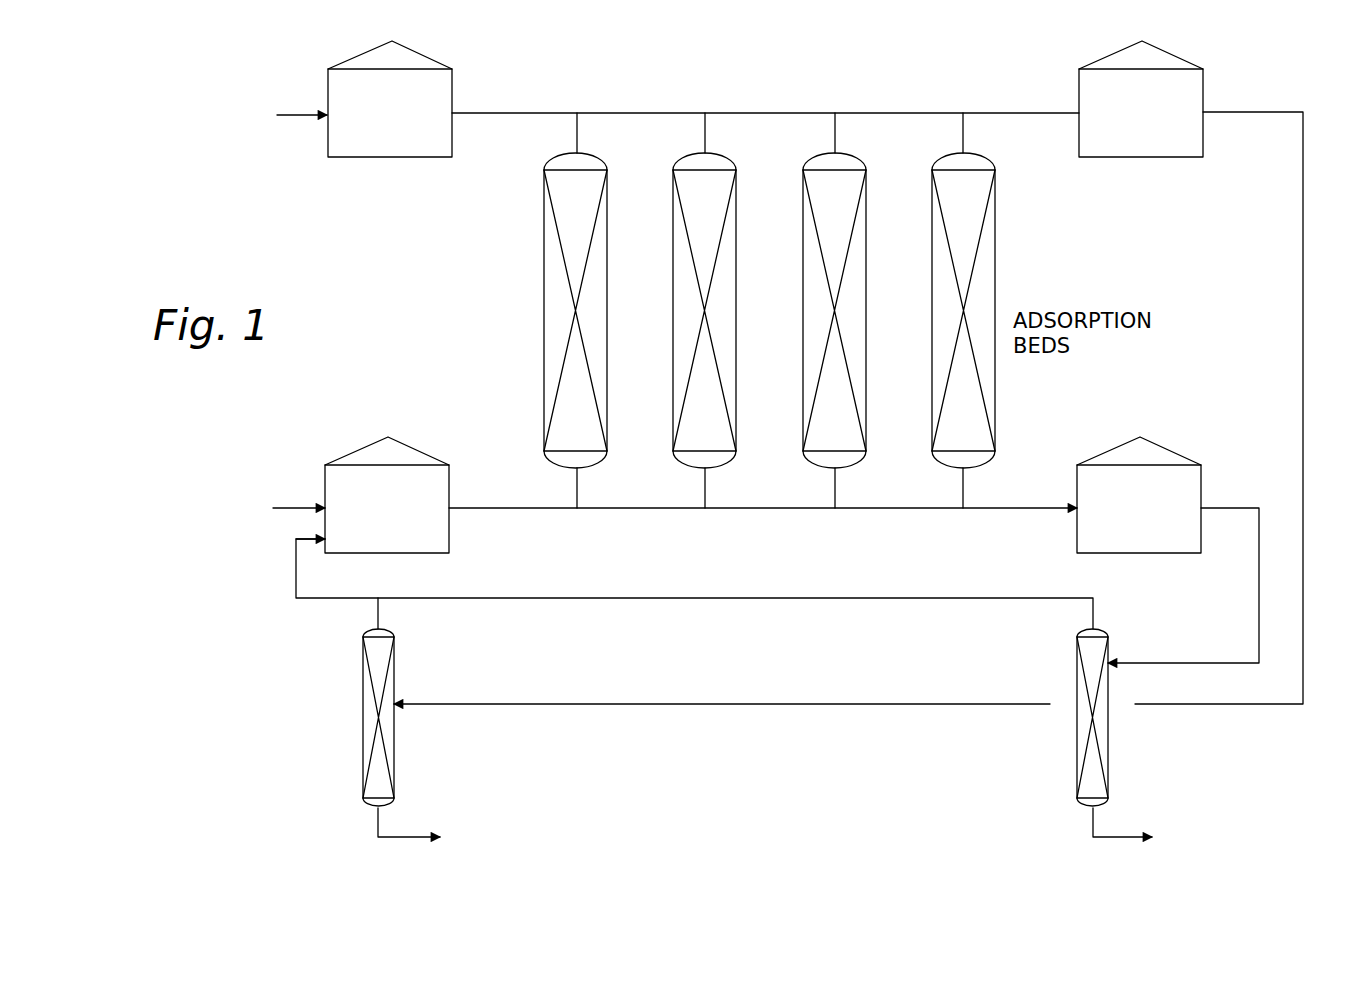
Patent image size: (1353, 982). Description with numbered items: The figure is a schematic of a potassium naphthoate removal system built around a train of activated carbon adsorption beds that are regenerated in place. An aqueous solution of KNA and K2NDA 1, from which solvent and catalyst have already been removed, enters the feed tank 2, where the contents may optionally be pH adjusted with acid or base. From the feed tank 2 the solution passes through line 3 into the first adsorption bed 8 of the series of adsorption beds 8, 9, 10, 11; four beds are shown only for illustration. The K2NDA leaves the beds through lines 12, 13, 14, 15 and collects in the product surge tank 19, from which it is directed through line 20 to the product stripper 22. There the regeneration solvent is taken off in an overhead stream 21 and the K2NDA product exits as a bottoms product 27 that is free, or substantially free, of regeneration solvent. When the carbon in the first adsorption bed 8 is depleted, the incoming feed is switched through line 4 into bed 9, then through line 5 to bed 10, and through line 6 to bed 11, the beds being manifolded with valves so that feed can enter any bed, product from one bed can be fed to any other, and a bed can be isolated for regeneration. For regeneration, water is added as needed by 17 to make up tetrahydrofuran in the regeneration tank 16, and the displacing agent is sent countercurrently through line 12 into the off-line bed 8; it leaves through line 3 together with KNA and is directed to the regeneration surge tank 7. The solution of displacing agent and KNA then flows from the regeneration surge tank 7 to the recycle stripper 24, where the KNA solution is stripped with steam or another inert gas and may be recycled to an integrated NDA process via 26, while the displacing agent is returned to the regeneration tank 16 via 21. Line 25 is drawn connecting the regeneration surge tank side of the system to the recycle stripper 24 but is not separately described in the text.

The aqueous solution of KNA and K2NDA 1 is at (290, 113).
The feed tank 2 is at (444, 62).
The line 3 is at (577, 132).
The line 4 is at (705, 132).
The line 5 is at (835, 132).
The line 6 is at (963, 132).
The regeneration surge tank 7 is at (1195, 62).
The adsorption bed 8 is at (544, 306).
The adsorption bed 9 is at (673, 306).
The adsorption bed 10 is at (803, 306).
The adsorption bed 11 is at (932, 306).
The line 12 is at (577, 488).
The line 13 is at (705, 488).
The line 14 is at (835, 488).
The line 15 is at (963, 488).
The regeneration tank 16 is at (441, 458).
The water addition 17 is at (286, 511).
The product surge tank 19 is at (1192, 458).
The line 20 is at (1259, 588).
The overhead stream 21 is at (630, 598).
The product stripper 22 is at (1077, 666).
The recycle stripper 24 is at (363, 666).
The regen surge return line 25 is at (630, 704).
The recycle stream 26 is at (376, 826).
The bottoms product 27 is at (1092, 826).